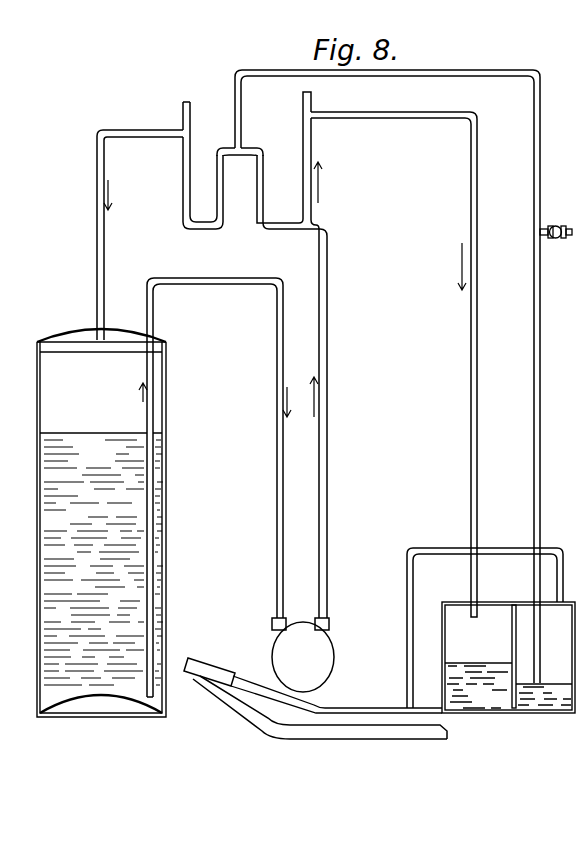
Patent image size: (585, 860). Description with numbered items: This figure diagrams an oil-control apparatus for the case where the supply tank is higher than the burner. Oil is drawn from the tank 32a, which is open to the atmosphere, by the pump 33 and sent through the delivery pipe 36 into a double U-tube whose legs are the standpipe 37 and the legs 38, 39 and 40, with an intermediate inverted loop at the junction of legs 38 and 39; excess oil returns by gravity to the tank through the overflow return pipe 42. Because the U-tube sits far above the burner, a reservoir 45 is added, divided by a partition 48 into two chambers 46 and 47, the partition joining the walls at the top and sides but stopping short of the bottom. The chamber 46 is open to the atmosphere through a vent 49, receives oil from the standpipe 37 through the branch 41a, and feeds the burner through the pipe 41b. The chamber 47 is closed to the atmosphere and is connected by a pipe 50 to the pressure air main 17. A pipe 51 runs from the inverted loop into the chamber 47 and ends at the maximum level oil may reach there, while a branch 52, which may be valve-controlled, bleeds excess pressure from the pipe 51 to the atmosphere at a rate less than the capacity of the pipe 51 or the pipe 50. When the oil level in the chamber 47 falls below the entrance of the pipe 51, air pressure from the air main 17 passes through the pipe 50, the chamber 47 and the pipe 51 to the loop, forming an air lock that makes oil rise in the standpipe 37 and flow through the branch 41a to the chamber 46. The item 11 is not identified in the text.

The nozzle 11 is at (200, 658).
The pressure air main 17 is at (353, 733).
The tank 32a is at (155, 425).
The pump 33 is at (325, 653).
The delivery pipe 36 is at (323, 350).
The standpipe 37 is at (305, 158).
The U-tube leg 38 is at (258, 200).
The U-tube leg 39 is at (222, 188).
The U-tube leg 40 is at (190, 179).
The branch 41a is at (435, 115).
The pipe 41b is at (350, 707).
The overflow return pipe 42 is at (118, 137).
The reservoir 45 is at (503, 703).
The chamber 46 is at (452, 645).
The chamber 47 is at (562, 647).
The partition 48 is at (512, 642).
The vent 49 is at (480, 610).
The pipe 50 is at (408, 551).
The pipe 51 is at (410, 73).
The branch 52 is at (548, 223).